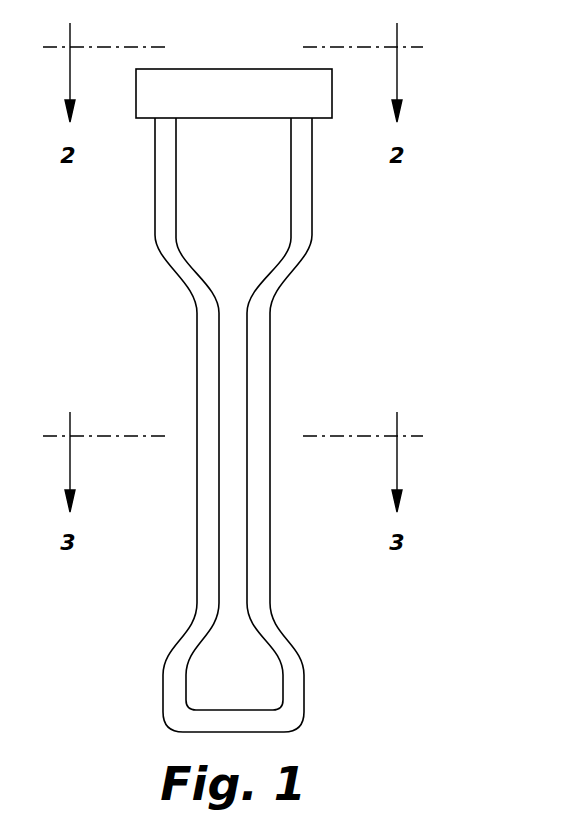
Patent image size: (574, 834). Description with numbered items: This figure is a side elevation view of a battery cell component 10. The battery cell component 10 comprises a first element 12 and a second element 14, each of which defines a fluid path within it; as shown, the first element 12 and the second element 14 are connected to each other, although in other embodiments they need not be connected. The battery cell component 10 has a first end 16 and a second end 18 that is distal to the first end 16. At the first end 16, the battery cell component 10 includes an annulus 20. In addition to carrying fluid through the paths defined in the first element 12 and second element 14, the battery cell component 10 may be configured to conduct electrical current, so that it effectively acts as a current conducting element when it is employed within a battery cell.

The battery cell component 10 is at (275, 400).
The first element 12 is at (176, 355).
The second element 14 is at (291, 355).
The first end 16 is at (124, 154).
The second end 18 is at (342, 677).
The annulus 20 is at (236, 102).